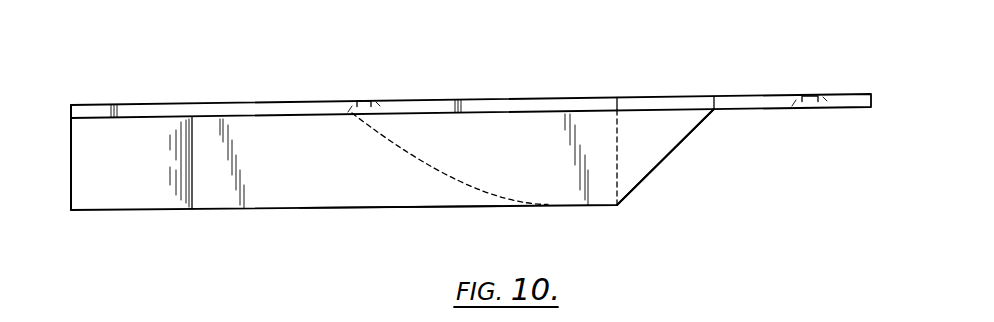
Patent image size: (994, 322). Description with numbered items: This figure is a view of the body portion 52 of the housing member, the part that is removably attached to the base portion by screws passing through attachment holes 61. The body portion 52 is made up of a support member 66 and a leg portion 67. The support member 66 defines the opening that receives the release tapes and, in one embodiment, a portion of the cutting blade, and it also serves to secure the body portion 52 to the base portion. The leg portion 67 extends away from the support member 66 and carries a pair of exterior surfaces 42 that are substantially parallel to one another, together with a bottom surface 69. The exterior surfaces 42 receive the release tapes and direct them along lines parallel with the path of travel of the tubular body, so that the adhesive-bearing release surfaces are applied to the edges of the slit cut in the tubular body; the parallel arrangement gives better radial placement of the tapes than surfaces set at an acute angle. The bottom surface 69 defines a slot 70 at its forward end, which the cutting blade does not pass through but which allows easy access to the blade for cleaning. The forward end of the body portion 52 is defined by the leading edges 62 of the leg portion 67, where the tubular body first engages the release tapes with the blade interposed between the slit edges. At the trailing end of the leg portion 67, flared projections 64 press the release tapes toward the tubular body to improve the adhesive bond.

The body portion 52 is at (149, 78).
The support member 66 is at (71, 106).
The attachment holes 61 is at (368, 100).
The exterior surfaces 42 is at (323, 193).
The projections 64 is at (135, 195).
The bottom surface 69 is at (402, 210).
The leg portion 67 is at (507, 215).
The slot 70 is at (584, 206).
The leading edges 62 is at (656, 167).